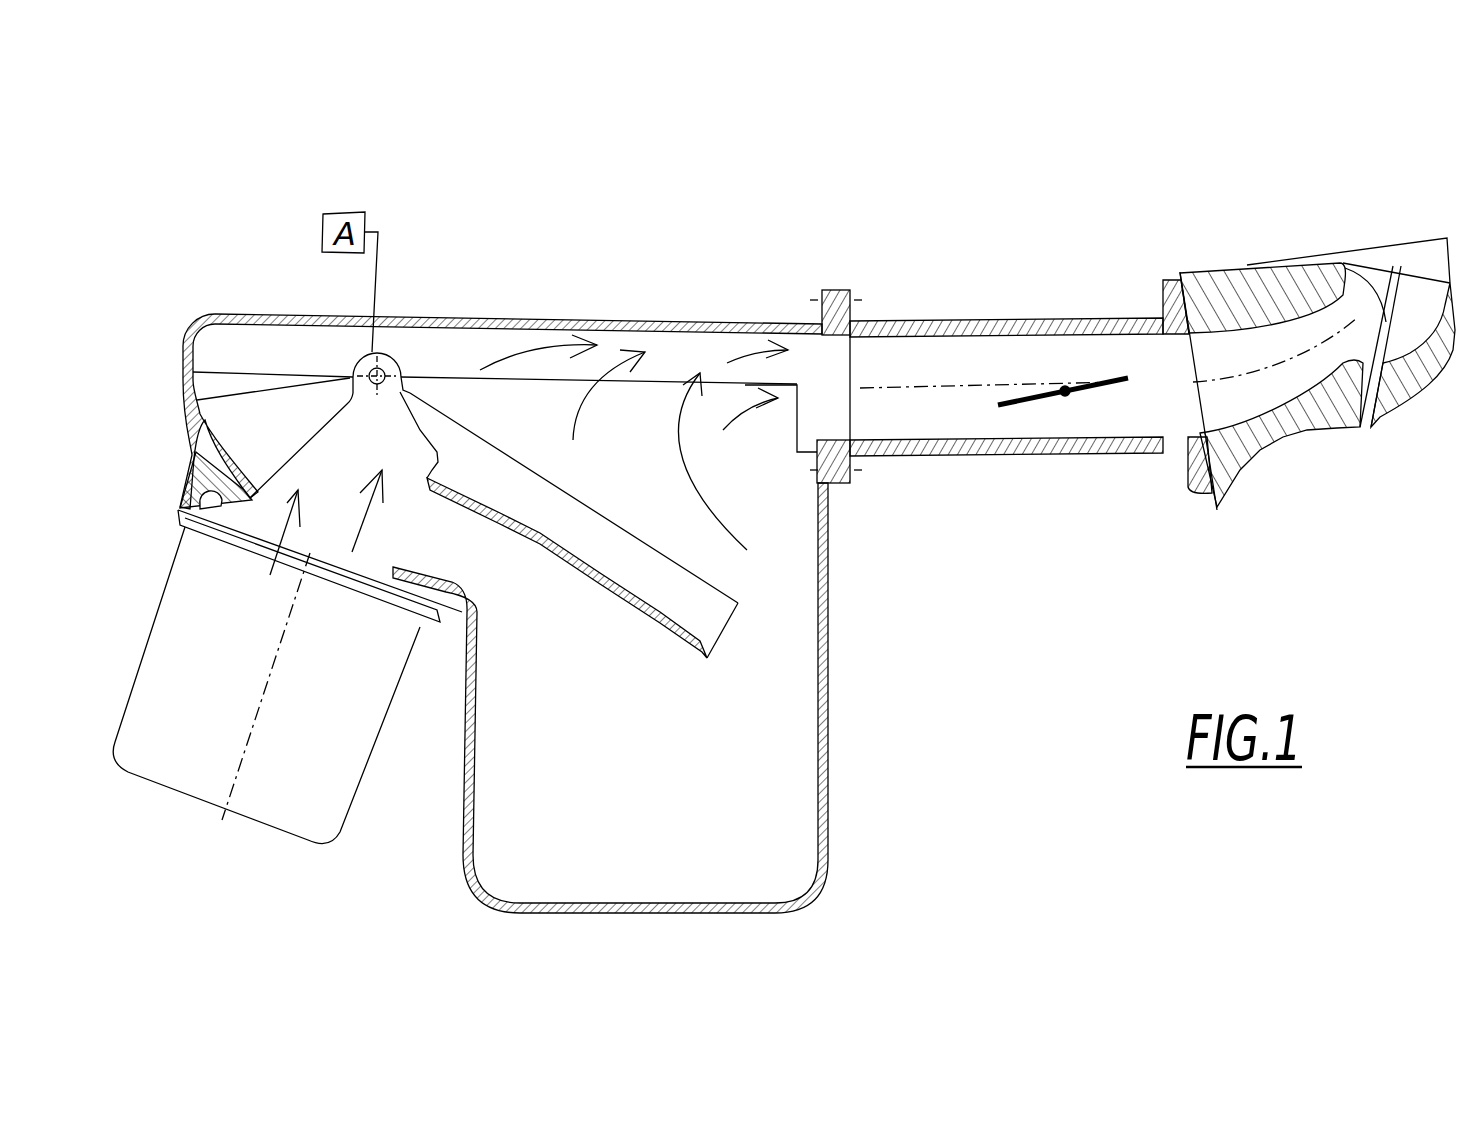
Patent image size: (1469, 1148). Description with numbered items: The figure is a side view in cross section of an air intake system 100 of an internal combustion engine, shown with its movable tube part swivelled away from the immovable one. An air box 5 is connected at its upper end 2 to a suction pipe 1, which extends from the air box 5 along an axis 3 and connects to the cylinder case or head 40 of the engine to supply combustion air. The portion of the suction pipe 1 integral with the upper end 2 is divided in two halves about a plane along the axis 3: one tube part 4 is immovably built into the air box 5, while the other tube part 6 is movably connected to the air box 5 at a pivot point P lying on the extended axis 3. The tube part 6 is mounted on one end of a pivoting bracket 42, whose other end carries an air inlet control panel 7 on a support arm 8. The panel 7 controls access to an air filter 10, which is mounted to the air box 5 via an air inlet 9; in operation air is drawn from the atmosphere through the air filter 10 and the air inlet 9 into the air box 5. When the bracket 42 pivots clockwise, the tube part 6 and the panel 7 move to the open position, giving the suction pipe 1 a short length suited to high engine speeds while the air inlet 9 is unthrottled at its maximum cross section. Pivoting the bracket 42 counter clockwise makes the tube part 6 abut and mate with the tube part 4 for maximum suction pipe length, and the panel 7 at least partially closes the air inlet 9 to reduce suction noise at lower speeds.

The suction pipe 1 is at (907, 358).
The upper end 2 is at (690, 357).
The axis 3 is at (593, 380).
The tube part 4 is at (508, 318).
The air box 5 is at (745, 730).
The tube part 6 is at (631, 573).
The air inlet control panel 7 is at (184, 432).
The support arm 8 is at (268, 407).
The air inlet 9 is at (367, 567).
The air filter 10 is at (318, 760).
The cylinder case or head 40 is at (1260, 272).
The pivoting bracket 42 is at (417, 404).
The air intake system 100 is at (1177, 135).
The pivot point P is at (379, 362).